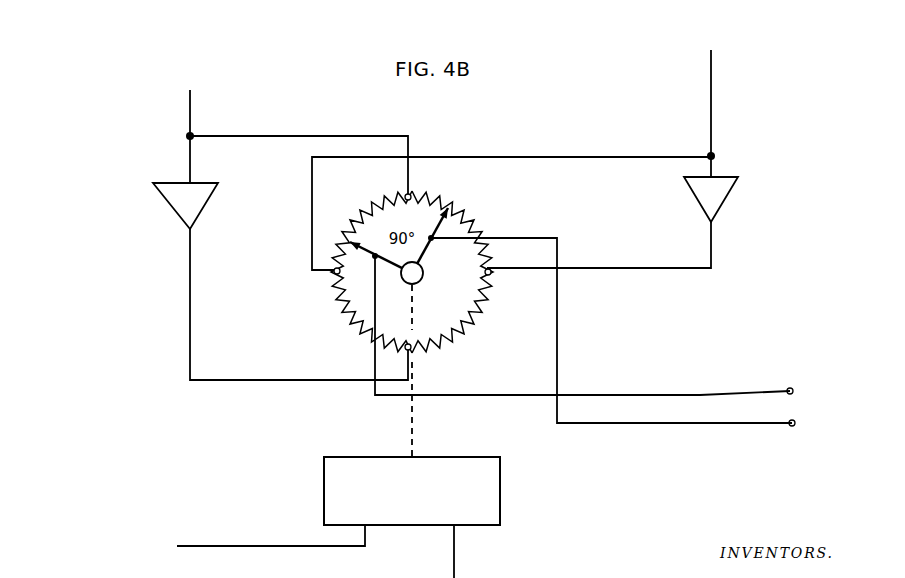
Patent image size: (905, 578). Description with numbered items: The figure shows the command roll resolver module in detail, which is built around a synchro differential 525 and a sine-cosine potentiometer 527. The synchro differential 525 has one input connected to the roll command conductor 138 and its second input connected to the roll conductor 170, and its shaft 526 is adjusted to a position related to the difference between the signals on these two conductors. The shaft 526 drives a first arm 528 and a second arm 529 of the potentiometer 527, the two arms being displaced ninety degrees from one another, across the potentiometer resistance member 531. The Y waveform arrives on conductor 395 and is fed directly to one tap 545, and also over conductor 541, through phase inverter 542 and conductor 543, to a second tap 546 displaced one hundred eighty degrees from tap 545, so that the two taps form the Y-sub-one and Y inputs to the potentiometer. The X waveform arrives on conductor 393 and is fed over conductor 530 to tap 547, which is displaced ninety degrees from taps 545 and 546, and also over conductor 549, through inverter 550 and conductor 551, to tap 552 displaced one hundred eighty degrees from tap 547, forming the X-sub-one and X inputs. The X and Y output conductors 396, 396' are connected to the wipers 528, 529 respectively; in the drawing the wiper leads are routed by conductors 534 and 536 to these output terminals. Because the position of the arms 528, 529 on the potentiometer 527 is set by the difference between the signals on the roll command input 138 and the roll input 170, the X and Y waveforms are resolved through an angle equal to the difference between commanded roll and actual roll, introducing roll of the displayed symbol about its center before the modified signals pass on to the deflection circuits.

The conductor 395 is at (190, 92).
The conductor 541 is at (190, 162).
The phase inverter 542 is at (168, 203).
The conductor 543 is at (190, 279).
The conductor 393 is at (711, 70).
The conductor 530 is at (620, 156).
The conductor 549 is at (711, 170).
The inverter 550 is at (727, 193).
The conductor 551 is at (703, 268).
The brush output lead to Y output 534 is at (557, 253).
The brush output lead to X output 536 is at (683, 394).
The X output conductor 396 is at (807, 377).
The Y output conductor 396' is at (808, 411).
The sine-cosine potentiometer 527 is at (472, 228).
The potentiometer resistance member 531 is at (362, 331).
The tap 545 is at (411, 195).
The tap 547 is at (335, 273).
The tap 552 is at (491, 275).
The tap 546 is at (412, 349).
The second arm 529 is at (437, 222).
The first arm 528 is at (358, 250).
The shaft 526 is at (412, 415).
The synchro differential 525 is at (412, 517).
The roll command conductor 138 is at (325, 546).
The roll conductor 170 is at (293, 577).